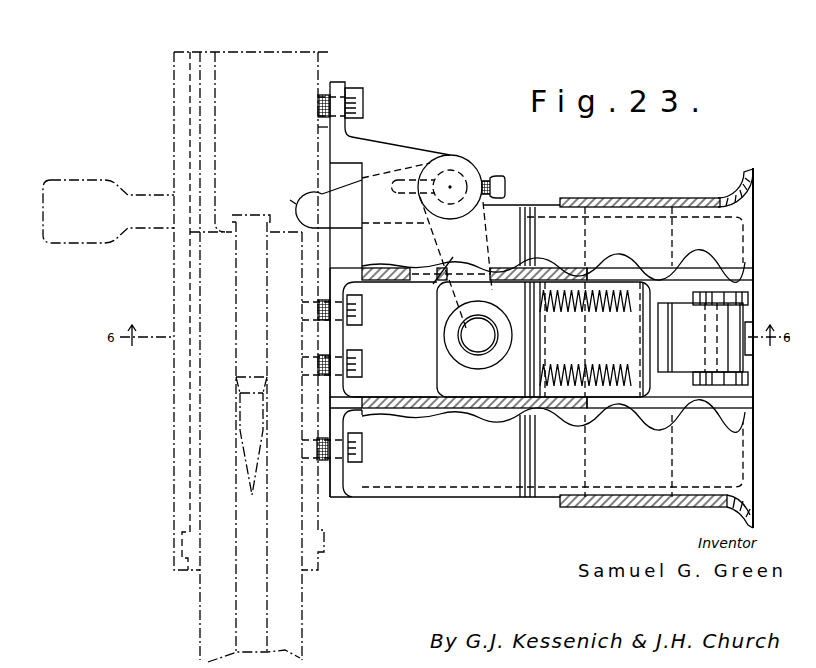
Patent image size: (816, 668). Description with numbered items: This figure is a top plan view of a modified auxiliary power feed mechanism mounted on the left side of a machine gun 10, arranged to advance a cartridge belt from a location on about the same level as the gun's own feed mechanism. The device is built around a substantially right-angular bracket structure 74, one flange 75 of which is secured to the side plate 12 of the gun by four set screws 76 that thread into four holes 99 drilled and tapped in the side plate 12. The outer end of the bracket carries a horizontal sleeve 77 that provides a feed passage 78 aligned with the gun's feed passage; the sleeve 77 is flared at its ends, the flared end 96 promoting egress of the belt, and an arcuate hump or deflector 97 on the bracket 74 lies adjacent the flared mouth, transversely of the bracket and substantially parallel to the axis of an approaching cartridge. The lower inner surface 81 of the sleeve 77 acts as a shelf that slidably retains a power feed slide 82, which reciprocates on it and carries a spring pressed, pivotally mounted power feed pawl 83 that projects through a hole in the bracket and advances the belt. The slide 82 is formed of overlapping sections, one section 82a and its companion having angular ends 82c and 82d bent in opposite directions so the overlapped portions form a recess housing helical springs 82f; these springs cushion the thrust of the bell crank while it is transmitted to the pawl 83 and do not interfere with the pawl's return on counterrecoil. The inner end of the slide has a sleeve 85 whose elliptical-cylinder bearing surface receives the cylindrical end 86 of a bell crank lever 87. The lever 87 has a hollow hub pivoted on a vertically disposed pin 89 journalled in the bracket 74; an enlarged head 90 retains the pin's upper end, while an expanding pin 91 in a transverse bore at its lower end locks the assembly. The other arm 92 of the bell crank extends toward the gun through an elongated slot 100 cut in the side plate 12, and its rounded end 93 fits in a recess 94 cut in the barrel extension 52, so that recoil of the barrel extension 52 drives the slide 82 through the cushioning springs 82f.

The housing 10 is at (205, 602).
The side plate 12 is at (175, 62).
The barrel extension 52 is at (215, 98).
The bracket structure 74 is at (378, 498).
The flange 75 is at (340, 498).
The set screws 76 is at (357, 92).
The horizontal sleeve 77 is at (684, 198).
The feed passage 78 is at (552, 352).
The lower inner surface 81 is at (660, 264).
The power feed slide 82 is at (440, 380).
The overlapping section 82a is at (548, 318).
The angular end 82c is at (662, 352).
The angular end 82d is at (528, 365).
The helical springs 82f is at (560, 366).
The power feed pawl 83 is at (700, 337).
The sleeve 85 is at (445, 332).
The cylindrical end 86 is at (478, 335).
The bell crank lever 87 is at (432, 280).
The pin 89 is at (453, 168).
The enlarged head 90 is at (485, 170).
The expanding pin 91 is at (408, 193).
The arm 92 is at (352, 197).
The rounded end 93 is at (309, 210).
The recess 94 is at (294, 203).
The flared end 96 is at (740, 522).
The arcuate hump 97 is at (536, 238).
The holes 99 is at (324, 95).
The elongated slot 100 is at (325, 152).